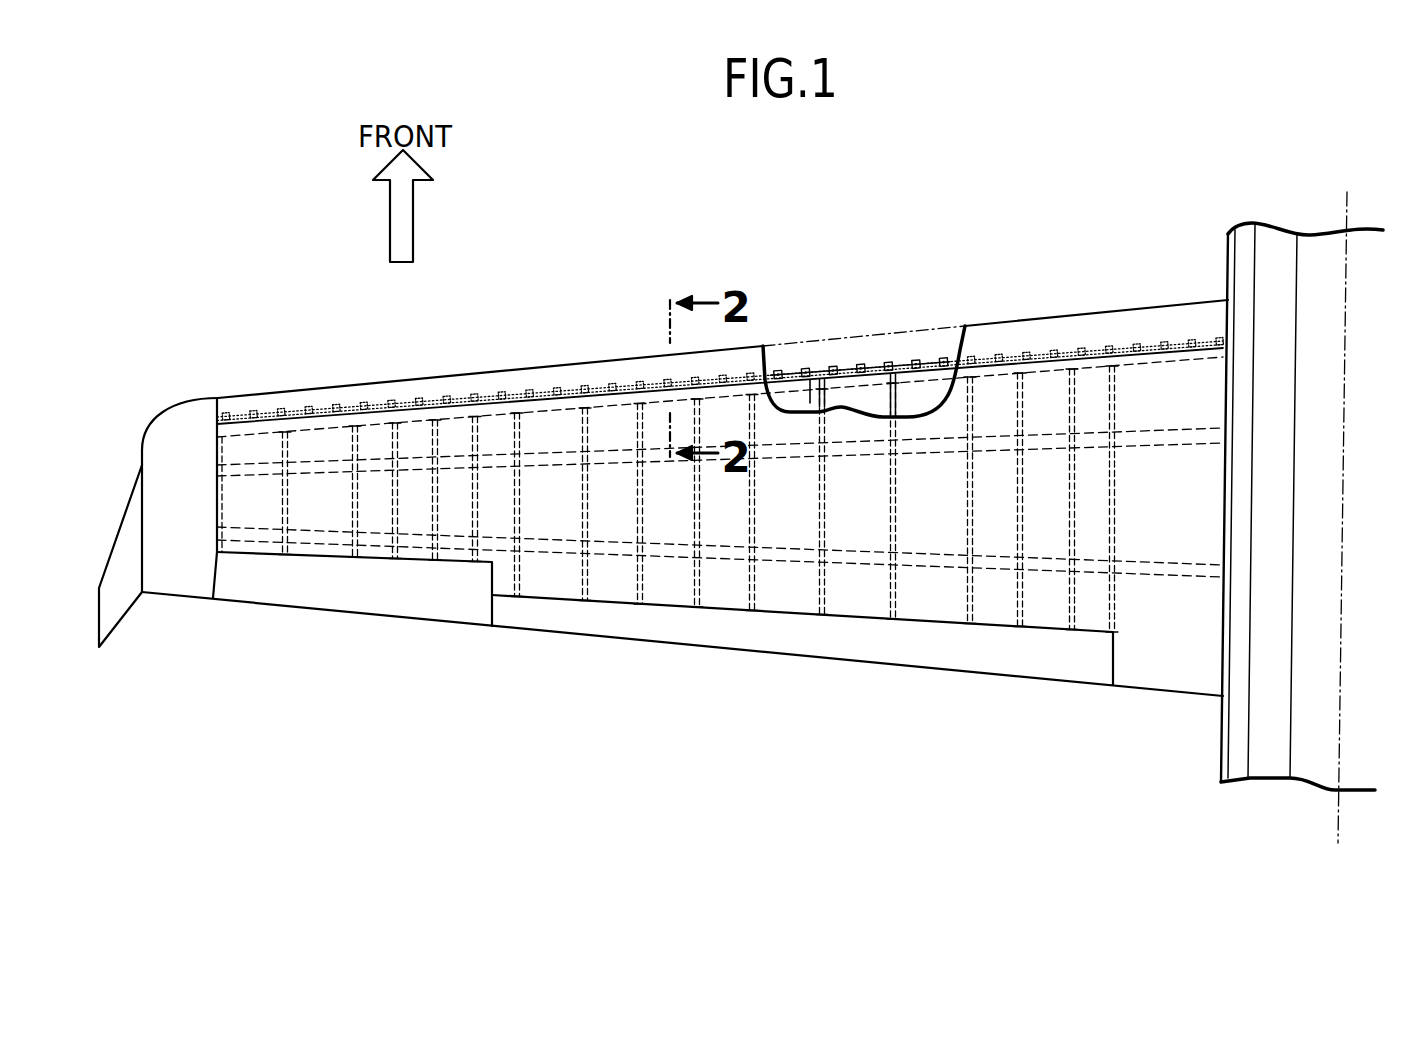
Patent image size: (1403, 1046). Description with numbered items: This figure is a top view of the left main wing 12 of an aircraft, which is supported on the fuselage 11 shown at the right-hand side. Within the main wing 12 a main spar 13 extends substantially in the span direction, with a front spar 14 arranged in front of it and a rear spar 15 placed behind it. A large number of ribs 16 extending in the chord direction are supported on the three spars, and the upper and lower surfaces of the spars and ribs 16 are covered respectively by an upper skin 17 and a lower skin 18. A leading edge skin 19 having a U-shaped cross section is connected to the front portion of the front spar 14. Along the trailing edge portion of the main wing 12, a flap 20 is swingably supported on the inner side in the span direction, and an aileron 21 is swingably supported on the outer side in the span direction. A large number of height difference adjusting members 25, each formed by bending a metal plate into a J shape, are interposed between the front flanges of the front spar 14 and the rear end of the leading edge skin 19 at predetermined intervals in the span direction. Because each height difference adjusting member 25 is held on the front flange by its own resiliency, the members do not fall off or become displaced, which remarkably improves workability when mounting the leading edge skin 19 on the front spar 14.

The fuselage 11 is at (1228, 263).
The main wing 12 is at (618, 314).
The main spar 13 is at (903, 448).
The front spar 14 is at (903, 377).
The rear spar 15 is at (902, 560).
The ribs 16 is at (282, 503).
The upper skin 17 is at (1010, 403).
The lower skin 18 is at (812, 385).
The leading edge skin 19 is at (1008, 335).
The flap 20 is at (750, 642).
The aileron 21 is at (355, 598).
The height difference adjusting member 25 is at (476, 391).